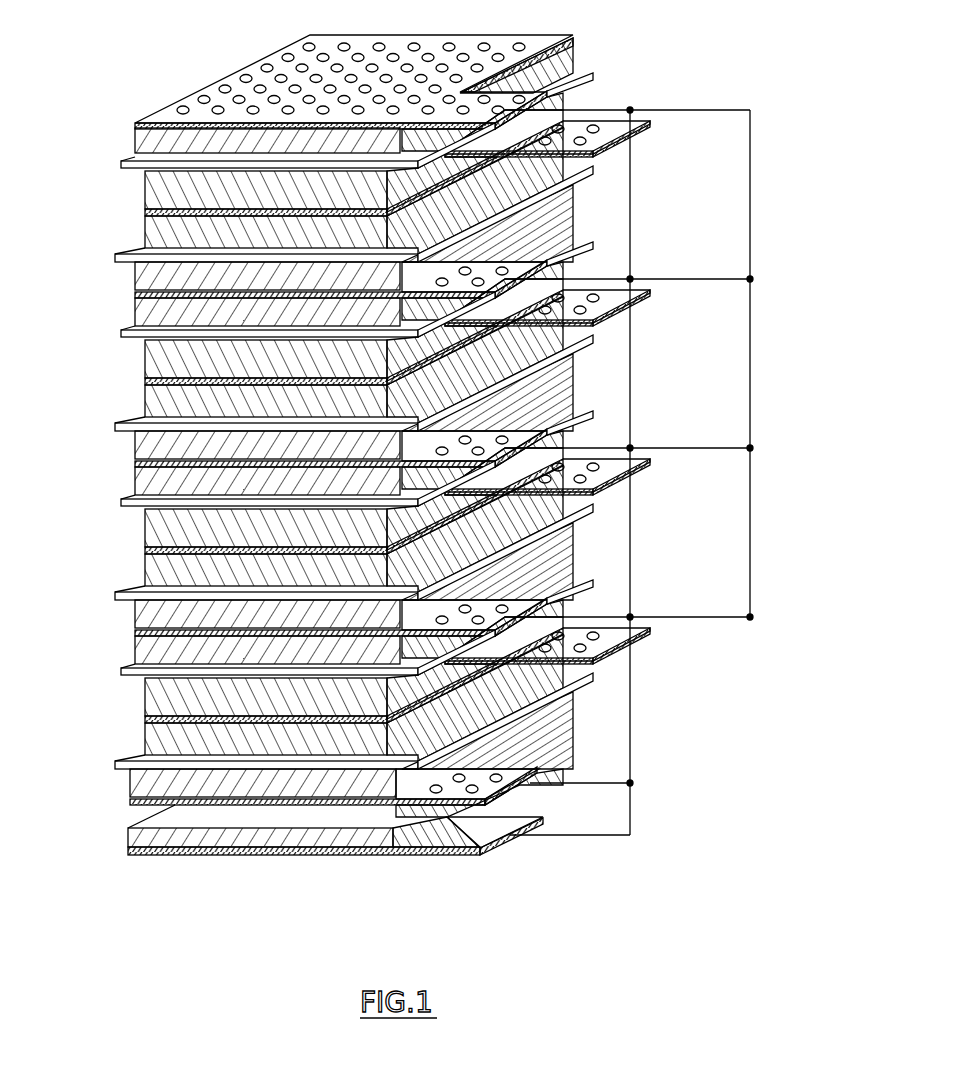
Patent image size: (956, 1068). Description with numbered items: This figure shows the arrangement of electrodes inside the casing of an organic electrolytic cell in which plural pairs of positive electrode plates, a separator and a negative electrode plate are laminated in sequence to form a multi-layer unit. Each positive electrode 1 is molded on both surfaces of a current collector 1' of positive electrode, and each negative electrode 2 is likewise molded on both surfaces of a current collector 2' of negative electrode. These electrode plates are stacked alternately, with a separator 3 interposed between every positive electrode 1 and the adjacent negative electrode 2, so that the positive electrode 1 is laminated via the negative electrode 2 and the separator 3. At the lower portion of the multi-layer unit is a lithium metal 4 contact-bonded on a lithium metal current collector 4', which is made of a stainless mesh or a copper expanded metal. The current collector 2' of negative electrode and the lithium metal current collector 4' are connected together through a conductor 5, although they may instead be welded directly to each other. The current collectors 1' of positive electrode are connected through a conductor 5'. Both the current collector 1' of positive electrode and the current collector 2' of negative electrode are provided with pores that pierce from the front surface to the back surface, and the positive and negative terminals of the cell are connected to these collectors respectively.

The positive electrode 1 is at (310, 444).
The current collector of positive electrode 1' is at (304, 423).
The negative electrode 2 is at (298, 455).
The current collector of negative electrode 2' is at (305, 422).
The separator 3 is at (575, 182).
The lithium metal 4 is at (307, 826).
The lithium metal current collector 4' is at (300, 843).
The conductor 5 is at (617, 807).
The conductor 5' is at (705, 471).